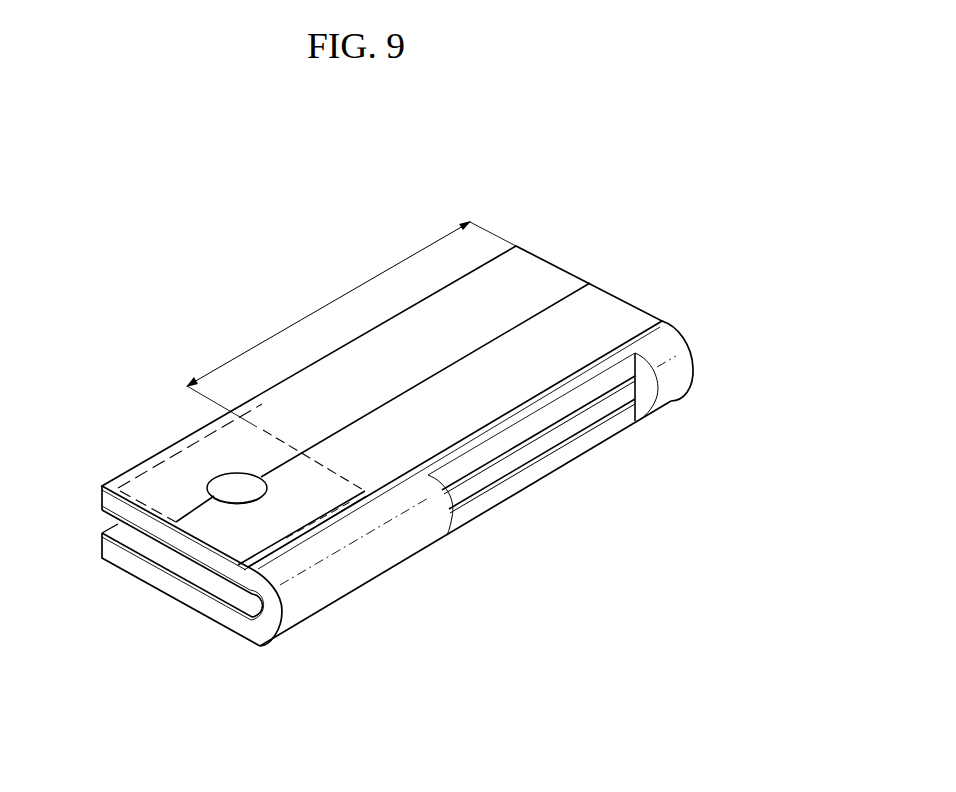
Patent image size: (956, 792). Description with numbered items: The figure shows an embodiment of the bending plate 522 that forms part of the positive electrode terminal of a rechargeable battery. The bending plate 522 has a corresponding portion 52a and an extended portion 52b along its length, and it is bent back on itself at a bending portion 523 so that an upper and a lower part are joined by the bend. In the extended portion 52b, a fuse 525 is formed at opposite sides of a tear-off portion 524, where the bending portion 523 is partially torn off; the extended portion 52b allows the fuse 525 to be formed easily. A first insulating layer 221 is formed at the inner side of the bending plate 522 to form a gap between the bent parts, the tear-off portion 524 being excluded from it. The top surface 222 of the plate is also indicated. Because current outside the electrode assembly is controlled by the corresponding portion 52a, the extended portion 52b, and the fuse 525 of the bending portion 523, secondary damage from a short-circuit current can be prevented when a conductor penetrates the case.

The bending plate 522 is at (140, 425).
The corresponding portion 52a is at (257, 428).
The extended portion 52b is at (351, 304).
The top surface of plate 222 is at (553, 322).
The tear-off portion 524 is at (600, 383).
The fuse 525 is at (667, 387).
The bending portion 523 is at (267, 623).
The first insulating layer 221 is at (177, 561).